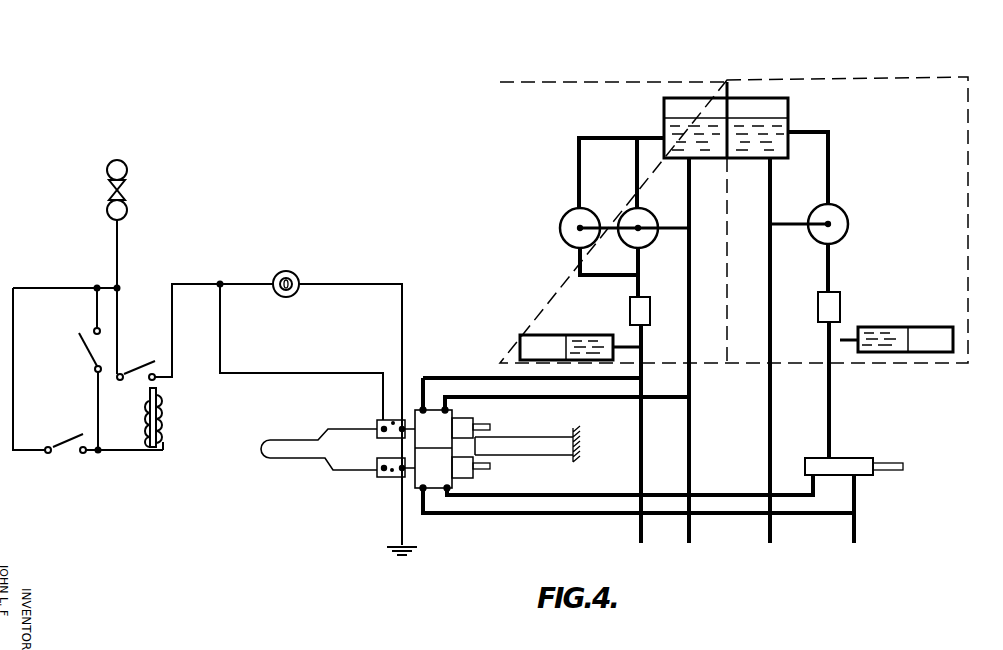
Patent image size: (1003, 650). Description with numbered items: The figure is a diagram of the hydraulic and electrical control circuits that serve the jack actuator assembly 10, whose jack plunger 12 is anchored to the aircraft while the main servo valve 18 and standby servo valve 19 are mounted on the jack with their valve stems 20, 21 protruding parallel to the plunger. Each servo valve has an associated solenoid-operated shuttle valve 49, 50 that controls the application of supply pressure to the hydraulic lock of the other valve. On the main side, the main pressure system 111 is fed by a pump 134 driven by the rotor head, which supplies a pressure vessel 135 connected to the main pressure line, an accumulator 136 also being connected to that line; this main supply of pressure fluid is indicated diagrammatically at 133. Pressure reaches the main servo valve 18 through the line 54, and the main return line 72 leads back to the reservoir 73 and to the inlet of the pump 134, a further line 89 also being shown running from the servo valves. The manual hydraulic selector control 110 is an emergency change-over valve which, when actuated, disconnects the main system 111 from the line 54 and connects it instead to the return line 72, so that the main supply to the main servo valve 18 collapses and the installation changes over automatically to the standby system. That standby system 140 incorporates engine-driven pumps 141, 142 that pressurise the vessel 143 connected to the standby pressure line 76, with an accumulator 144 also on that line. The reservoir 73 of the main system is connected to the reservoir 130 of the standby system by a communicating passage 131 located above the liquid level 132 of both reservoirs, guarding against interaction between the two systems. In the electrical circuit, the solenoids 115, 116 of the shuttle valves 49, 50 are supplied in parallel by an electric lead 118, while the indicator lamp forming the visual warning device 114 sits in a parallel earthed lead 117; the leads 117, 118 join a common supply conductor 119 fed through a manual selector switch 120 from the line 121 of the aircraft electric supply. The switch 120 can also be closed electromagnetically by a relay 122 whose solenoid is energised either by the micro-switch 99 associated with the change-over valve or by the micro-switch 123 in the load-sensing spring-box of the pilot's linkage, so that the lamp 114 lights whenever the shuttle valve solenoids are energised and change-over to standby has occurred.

The jack actuator assembly 10 is at (330, 456).
The jack plunger 12 is at (558, 440).
The main servo valve 18 is at (420, 478).
The standby servo valve 19 is at (432, 407).
The valve stem 20 is at (478, 463).
The valve stem 21 is at (490, 430).
The shuttle valve 49 is at (392, 471).
The shuttle valve 50 is at (393, 420).
The line 54 is at (507, 514).
The main return line 72 is at (565, 494).
The reservoir 73 is at (788, 130).
The standby pressure line 76 is at (467, 376).
The pressure line 89 is at (546, 398).
The micro-switch 99 is at (80, 347).
The manual hydraulic selector control 110 is at (860, 458).
The main pressure system 111 is at (835, 419).
The visual warning device 114 is at (276, 272).
The solenoid 115 is at (378, 476).
The solenoid 116 is at (378, 423).
The earthed lead 117 is at (365, 282).
The electric lead 118 is at (268, 372).
The common supply conductor 119 is at (199, 283).
The manual selector switch 120 is at (144, 367).
The line 121 is at (117, 250).
The relay 122 is at (167, 414).
The micro-switch 123 is at (66, 435).
The reservoir 130 is at (670, 130).
The communicating passage 131 is at (725, 107).
The liquid level 132 is at (752, 115).
The main supply of pressure fluid 133 is at (899, 82).
The pump 134 is at (848, 220).
The pressure vessel 135 is at (841, 303).
The accumulator 136 is at (895, 327).
The standby system 140 is at (500, 158).
The pump 141 is at (565, 215).
The pump 142 is at (627, 210).
The vessel 143 is at (628, 308).
The accumulator 144 is at (550, 335).